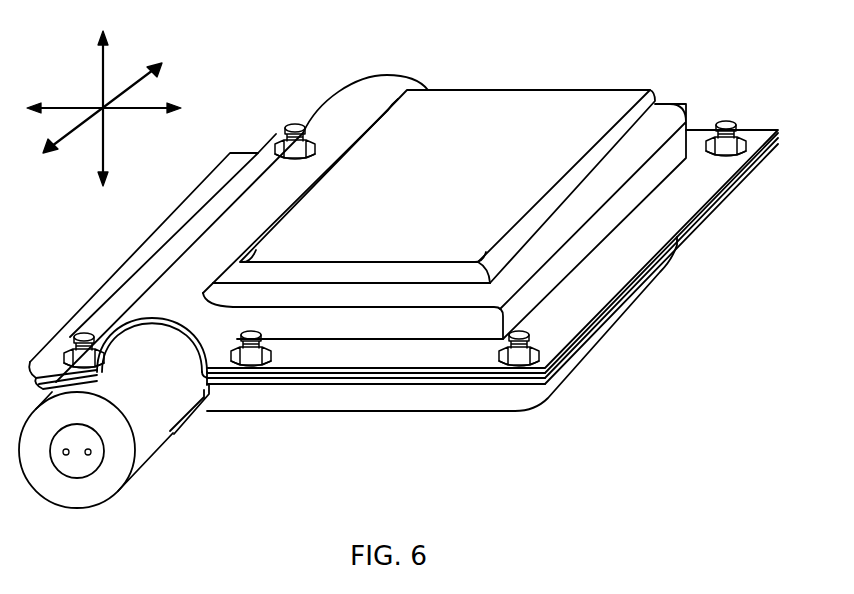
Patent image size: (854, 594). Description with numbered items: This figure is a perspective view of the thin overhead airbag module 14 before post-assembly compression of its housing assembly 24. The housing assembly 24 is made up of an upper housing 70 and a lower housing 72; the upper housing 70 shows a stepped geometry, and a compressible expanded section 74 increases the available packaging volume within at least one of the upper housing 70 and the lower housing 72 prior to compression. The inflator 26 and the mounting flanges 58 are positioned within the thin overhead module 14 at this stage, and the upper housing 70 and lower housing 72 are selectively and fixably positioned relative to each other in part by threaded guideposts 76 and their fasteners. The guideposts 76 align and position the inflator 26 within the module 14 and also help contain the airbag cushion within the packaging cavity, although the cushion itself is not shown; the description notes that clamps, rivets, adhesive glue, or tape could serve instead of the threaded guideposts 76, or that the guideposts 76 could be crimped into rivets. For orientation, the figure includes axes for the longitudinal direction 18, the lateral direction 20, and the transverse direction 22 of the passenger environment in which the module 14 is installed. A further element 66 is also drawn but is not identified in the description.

The thin overhead airbag module 14 is at (275, 105).
The longitudinal direction 18 is at (132, 110).
The lateral direction 20 is at (143, 83).
The transverse direction 22 is at (105, 67).
The housing assembly 24 is at (697, 104).
The inflator 26 is at (148, 455).
The mounting flanges 58 is at (648, 240).
The conductors 66 is at (66, 456).
The upper housing 70 is at (443, 95).
The lower housing 72 is at (447, 408).
The compressible expanded section 74 is at (517, 120).
The threaded guideposts 76 is at (293, 122).